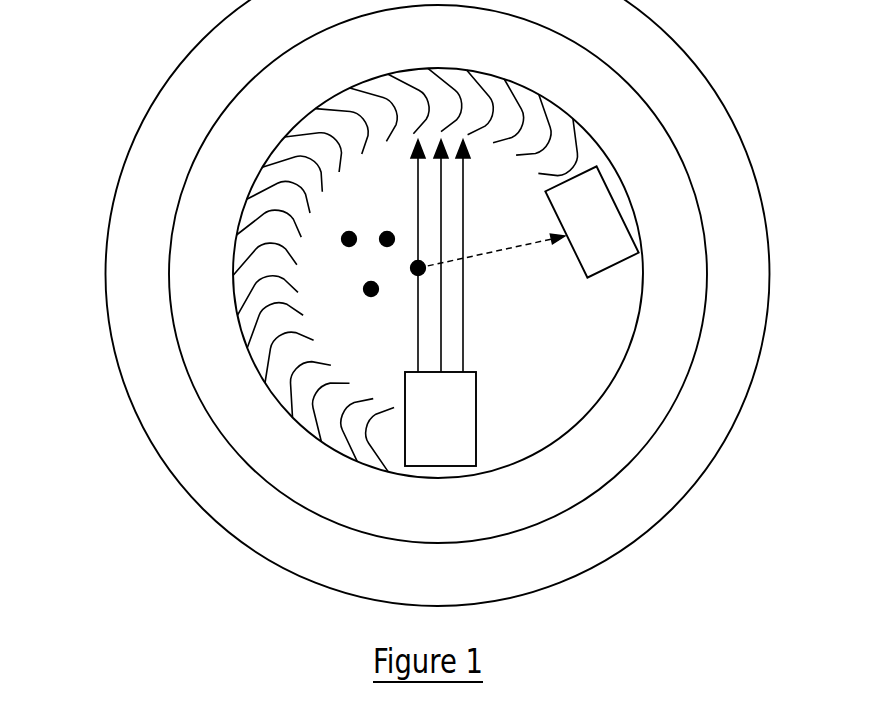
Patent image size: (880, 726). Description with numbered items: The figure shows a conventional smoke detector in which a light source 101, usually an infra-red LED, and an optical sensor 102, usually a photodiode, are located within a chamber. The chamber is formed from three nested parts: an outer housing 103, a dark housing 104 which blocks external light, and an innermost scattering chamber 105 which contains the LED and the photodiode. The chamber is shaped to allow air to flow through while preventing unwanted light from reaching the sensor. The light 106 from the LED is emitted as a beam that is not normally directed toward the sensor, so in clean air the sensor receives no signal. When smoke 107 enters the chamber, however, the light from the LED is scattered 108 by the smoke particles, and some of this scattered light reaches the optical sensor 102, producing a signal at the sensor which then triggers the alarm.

The light source 101 is at (459, 433).
The optical sensor 102 is at (610, 233).
The outer housing 103 is at (105, 270).
The dark housing 104 is at (170, 308).
The scattering chamber 105 is at (263, 381).
The light 106 is at (463, 348).
The smoke 107 is at (416, 271).
The scattered light 108 is at (518, 248).